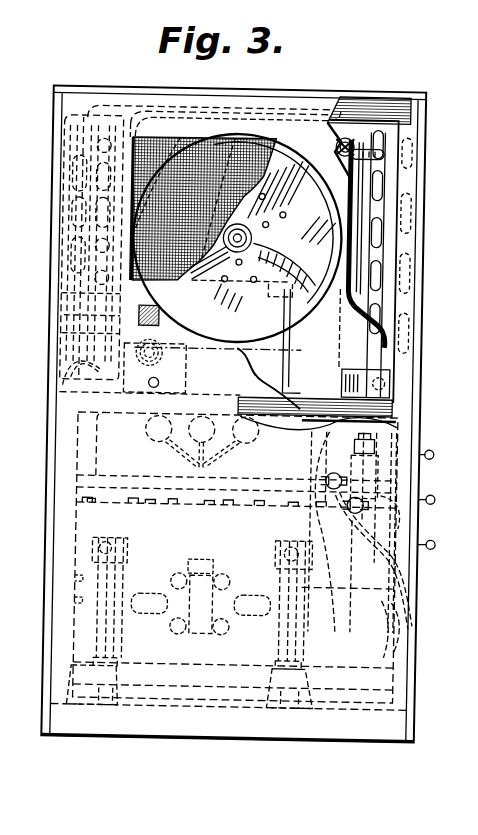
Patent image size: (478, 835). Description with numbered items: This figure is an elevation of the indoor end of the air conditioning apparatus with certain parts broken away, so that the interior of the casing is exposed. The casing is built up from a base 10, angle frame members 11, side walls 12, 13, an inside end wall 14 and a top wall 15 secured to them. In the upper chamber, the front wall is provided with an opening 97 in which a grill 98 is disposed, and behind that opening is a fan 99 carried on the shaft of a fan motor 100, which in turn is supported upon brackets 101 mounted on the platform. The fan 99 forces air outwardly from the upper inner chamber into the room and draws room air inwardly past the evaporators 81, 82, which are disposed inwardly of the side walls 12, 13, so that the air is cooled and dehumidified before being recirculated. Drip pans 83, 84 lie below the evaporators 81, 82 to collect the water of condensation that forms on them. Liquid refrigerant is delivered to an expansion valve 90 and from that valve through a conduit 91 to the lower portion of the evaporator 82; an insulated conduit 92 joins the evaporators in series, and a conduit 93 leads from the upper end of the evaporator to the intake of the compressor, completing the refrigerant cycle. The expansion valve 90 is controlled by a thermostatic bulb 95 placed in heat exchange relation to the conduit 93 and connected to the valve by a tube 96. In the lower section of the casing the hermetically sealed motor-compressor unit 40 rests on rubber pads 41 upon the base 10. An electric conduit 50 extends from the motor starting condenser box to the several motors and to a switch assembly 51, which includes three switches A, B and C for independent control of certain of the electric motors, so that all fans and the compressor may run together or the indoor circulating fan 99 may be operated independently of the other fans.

The base 10 is at (194, 724).
The angle frame members 11 is at (64, 636).
The side wall 12 is at (55, 262).
The side wall 13 is at (422, 196).
The inside end wall 14 is at (88, 133).
The top wall 15 is at (339, 93).
The motor-compressor unit 40 is at (100, 455).
The rubber pads 41 is at (111, 702).
The electric conduit 50 is at (240, 478).
The switch assembly 51 is at (400, 467).
The evaporator 81 is at (423, 289).
The evaporator 82 is at (92, 210).
The drip pan 83 is at (392, 376).
The drip pan 84 is at (77, 391).
The expansion valve 90 is at (197, 340).
The conduit 91 is at (93, 325).
The insulated conduit 92 is at (122, 121).
The conduit 93 is at (351, 147).
The thermostatic bulb 95 is at (343, 137).
The tube 96 is at (272, 110).
The opening 97 is at (175, 139).
The grill 98 is at (230, 138).
The fan 99 is at (248, 328).
The fan motor 100 is at (285, 230).
The brackets 101 is at (289, 351).
The switch A is at (434, 452).
The switch B is at (436, 497).
The switch C is at (437, 542).